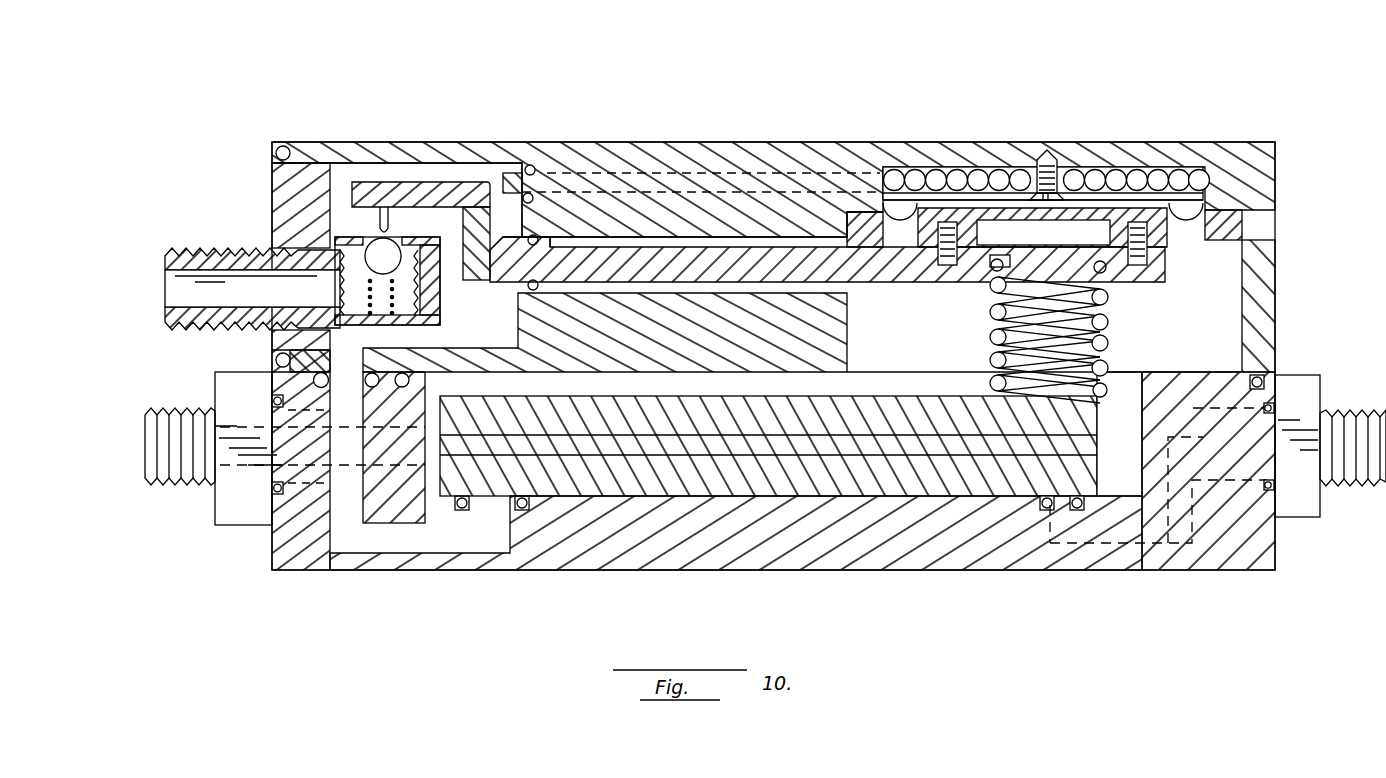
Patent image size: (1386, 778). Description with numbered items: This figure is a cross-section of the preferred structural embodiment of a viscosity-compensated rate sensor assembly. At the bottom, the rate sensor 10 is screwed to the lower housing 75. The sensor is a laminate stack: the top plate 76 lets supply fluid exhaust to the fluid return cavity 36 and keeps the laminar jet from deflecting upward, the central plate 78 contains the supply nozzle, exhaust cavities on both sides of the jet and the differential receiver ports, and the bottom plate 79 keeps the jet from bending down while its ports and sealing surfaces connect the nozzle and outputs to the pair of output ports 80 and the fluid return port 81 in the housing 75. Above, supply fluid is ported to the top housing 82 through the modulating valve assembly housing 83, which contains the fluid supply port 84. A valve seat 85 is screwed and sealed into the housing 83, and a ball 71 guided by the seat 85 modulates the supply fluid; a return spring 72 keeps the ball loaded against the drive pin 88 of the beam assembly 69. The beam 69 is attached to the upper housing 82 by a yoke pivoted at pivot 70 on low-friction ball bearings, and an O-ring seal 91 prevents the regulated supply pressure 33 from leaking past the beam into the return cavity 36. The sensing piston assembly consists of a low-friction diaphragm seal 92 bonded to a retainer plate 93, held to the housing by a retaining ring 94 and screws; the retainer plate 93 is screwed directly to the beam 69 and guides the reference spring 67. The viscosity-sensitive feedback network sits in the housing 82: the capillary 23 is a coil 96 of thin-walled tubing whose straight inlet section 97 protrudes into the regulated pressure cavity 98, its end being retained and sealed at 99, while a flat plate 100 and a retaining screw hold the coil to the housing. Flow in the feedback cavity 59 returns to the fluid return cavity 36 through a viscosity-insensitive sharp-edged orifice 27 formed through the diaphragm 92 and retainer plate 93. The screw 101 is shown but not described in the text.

The rate sensor 10 is at (847, 480).
The capillary 23 is at (1072, 165).
The sharp-edged orifice 27 is at (1057, 222).
The regulated supply pressure 33 is at (350, 420).
The fluid return cavity 36 is at (772, 380).
The feedback cavity 59 is at (1200, 205).
The reference spring 67 is at (1107, 320).
The beam assembly 69 is at (687, 250).
The pivot 70 is at (537, 287).
The ball 71 is at (377, 257).
The return spring 72 is at (398, 298).
The lower housing 75 is at (918, 572).
The top plate 76 is at (858, 403).
The central plate 78 is at (773, 450).
The bottom plate 79 is at (683, 483).
The output ports 80 is at (1377, 483).
The fluid return port 81 is at (188, 483).
The top housing 82 is at (1272, 173).
The modulating valve assembly housing 83 is at (277, 180).
The fluid supply port 84 is at (230, 247).
The valve seat 85 is at (440, 270).
The drive pin 88 is at (390, 220).
The O-ring seal 91 is at (560, 195).
The diaphragm seal 92 is at (905, 215).
The retainer plate 93 is at (983, 258).
The retaining ring 94 is at (1242, 225).
The coil 96 is at (1147, 173).
The straight inlet section 97 is at (862, 150).
The regulated pressure cavity 98 is at (420, 168).
The capillary end retention and seal 99 is at (530, 165).
The flat plate 100 is at (985, 193).
The screw 101 is at (1055, 148).